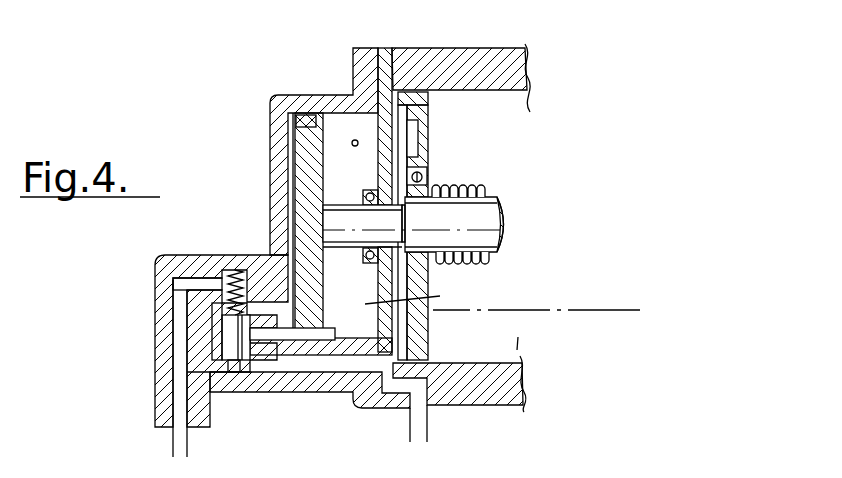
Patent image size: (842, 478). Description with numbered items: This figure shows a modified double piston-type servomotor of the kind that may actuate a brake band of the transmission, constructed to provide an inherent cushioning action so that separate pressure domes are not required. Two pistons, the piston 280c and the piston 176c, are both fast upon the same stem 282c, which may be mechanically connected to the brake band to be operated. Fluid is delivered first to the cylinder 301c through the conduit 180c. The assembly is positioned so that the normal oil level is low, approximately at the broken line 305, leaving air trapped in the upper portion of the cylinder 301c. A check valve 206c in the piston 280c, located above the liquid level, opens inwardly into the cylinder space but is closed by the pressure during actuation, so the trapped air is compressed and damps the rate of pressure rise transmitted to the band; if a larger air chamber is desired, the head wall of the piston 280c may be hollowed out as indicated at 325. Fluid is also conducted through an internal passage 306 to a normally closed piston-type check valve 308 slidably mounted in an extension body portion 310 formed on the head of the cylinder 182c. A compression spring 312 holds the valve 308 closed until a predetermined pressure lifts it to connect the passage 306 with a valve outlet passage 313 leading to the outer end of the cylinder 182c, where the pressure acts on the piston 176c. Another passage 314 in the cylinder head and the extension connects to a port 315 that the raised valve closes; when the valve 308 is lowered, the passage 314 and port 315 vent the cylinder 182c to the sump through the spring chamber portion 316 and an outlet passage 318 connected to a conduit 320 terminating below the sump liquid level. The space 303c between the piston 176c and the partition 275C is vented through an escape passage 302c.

The partition 275C is at (395, 14).
The cylinder 182c is at (272, 100).
The piston 176c is at (300, 138).
The escape passage 302c is at (355, 146).
The hollowed-out region of piston head wall 325 is at (412, 135).
The check valve 206c is at (420, 176).
The stem 282c is at (483, 219).
The piston 280c is at (428, 278).
The space 303c is at (425, 297).
The broken line indicating oil level 305 is at (557, 305).
The cylinder 301c is at (397, 330).
The passage 314 is at (280, 310).
The outlet passage 318 is at (180, 382).
The port 315 is at (166, 297).
The internal passage 306 is at (325, 366).
The conduit 320 is at (173, 447).
The piston-type check valve 308 is at (222, 329).
The compression spring 312 is at (267, 250).
The extension body portion 310 is at (198, 282).
The spring chamber portion 316 is at (222, 290).
The valve outlet passage 313 is at (280, 336).
The conduit 180c is at (416, 418).